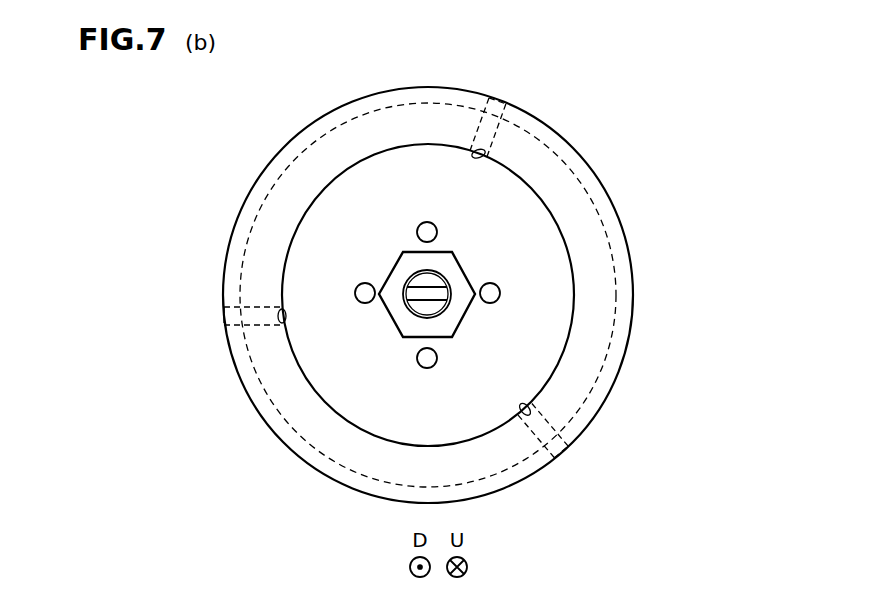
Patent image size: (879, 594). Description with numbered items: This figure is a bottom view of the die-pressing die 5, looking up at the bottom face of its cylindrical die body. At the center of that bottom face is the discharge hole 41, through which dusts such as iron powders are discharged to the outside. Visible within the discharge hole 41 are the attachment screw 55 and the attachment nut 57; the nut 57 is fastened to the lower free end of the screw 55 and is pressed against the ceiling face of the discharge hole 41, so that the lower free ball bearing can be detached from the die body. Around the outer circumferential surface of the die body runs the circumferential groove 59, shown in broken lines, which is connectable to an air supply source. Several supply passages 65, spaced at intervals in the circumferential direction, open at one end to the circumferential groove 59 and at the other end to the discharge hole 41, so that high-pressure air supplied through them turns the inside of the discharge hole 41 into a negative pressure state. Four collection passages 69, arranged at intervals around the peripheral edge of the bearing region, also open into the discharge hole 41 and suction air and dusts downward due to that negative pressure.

The die-pressing die 5 is at (552, 108).
The discharge hole 41 is at (323, 220).
The circumferential groove 59 is at (228, 242).
The supply passages 65 is at (492, 120).
The attachment nut 57 is at (450, 260).
The attachment screw 55 is at (430, 307).
The collection passages 69 is at (427, 222).